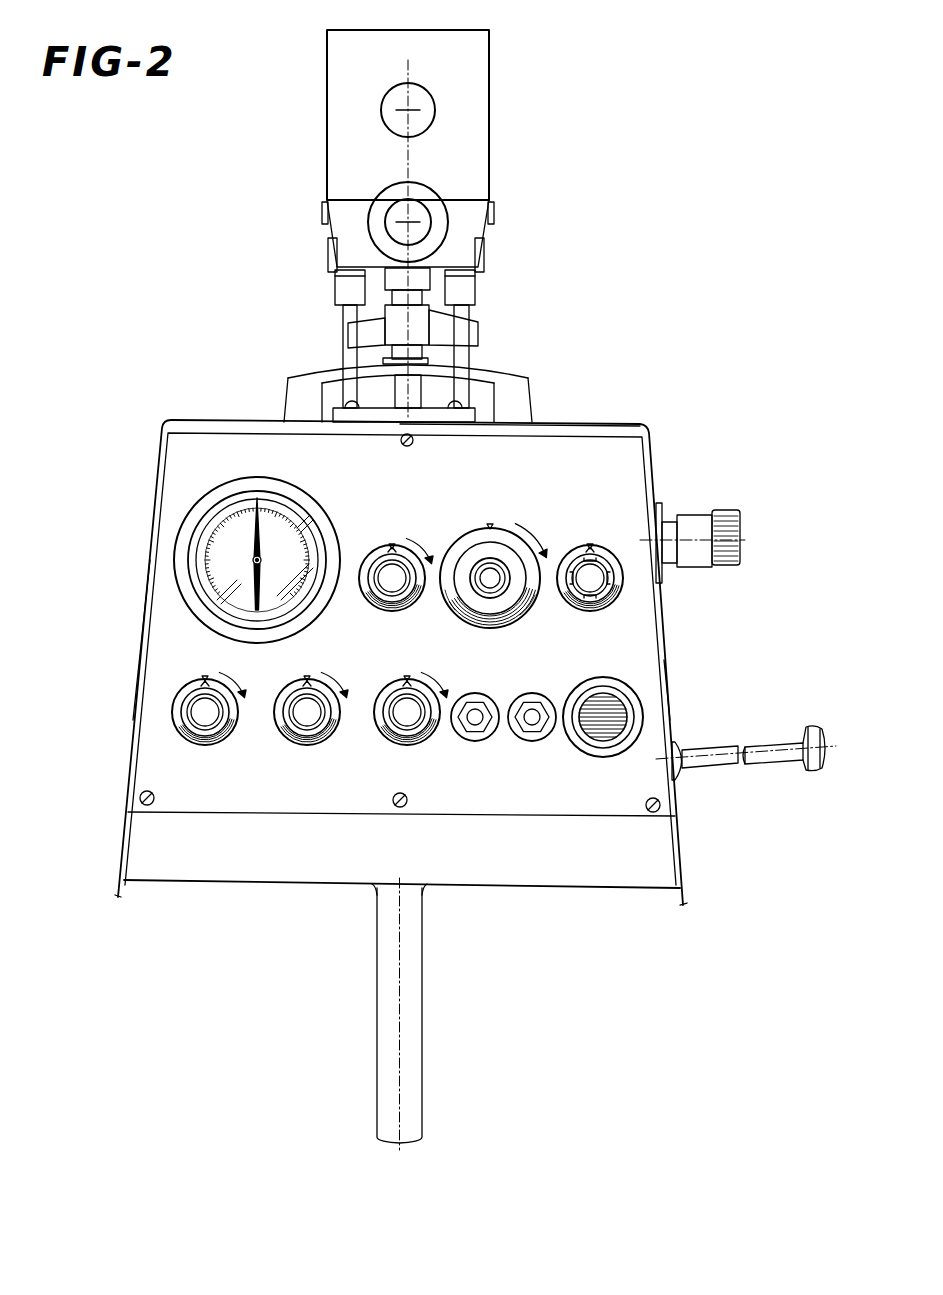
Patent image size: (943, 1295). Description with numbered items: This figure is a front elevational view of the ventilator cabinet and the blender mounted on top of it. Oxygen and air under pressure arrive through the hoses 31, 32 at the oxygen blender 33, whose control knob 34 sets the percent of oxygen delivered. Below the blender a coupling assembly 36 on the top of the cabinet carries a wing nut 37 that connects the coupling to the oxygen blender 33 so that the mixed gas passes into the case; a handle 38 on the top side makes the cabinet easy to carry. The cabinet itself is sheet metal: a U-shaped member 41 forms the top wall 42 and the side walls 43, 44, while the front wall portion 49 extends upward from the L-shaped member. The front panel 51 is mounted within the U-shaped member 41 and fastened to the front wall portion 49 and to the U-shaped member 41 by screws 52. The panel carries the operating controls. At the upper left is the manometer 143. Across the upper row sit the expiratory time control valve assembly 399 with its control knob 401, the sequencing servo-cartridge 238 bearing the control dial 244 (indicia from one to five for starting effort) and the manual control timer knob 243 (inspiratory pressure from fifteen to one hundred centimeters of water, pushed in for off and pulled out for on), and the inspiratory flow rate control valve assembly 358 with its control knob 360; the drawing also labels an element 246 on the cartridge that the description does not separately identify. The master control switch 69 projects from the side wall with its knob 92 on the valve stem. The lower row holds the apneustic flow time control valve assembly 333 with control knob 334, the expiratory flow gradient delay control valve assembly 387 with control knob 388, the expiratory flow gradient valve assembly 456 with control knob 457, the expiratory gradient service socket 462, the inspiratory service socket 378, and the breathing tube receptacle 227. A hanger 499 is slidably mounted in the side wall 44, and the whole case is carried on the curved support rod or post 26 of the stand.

The oxygen blender 33 is at (490, 68).
The control knob 34 is at (436, 206).
The hose 31 is at (345, 312).
The hose 32 is at (465, 357).
The wing nut 37 is at (452, 335).
The coupling assembly 36 is at (382, 388).
The handle 38 is at (510, 381).
The U-shaped member 41 is at (201, 418).
The top wall 42 is at (594, 426).
The side wall 43 is at (141, 624).
The side wall 44 is at (670, 697).
The front wall portion 49 is at (498, 878).
The front panel 51 is at (396, 482).
The screws 52 is at (140, 804).
The manometer 143 is at (275, 486).
The control knob 401 is at (377, 548).
The expiratory time control valve assembly 399 is at (385, 608).
The sequencing servo-cartridge 238 is at (451, 548).
The control dial 244 is at (462, 612).
The manual control timer knob 243 is at (494, 604).
The starting effort scale 246 is at (510, 603).
The inspiratory flow rate control valve assembly 358 is at (613, 604).
The control knob 360 is at (582, 606).
The knob 92 is at (697, 518).
The master control switch 69 is at (742, 521).
The apneustic flow time control valve assembly 333 is at (176, 730).
The control knob 334 is at (205, 740).
The expiratory flow gradient delay control valve assembly 387 is at (278, 732).
The control knob 388 is at (308, 740).
The expiratory flow gradient valve assembly 456 is at (377, 730).
The control knob 457 is at (410, 740).
The expiratory gradient service socket 462 is at (469, 727).
The inspiratory service socket 378 is at (525, 730).
The breathing tube receptacle 227 is at (590, 753).
The hanger 499 is at (815, 726).
The support rod or post 26 is at (378, 997).